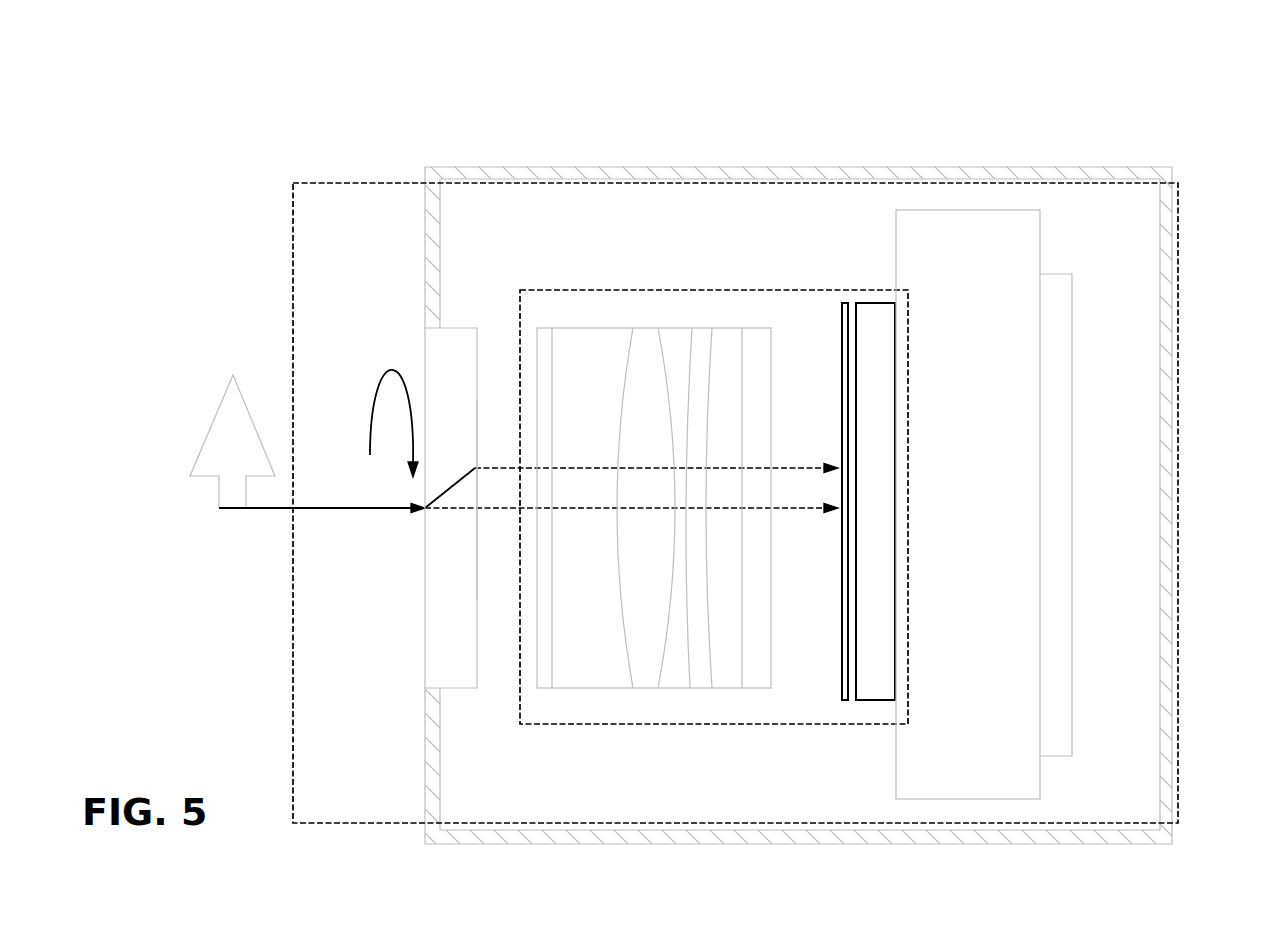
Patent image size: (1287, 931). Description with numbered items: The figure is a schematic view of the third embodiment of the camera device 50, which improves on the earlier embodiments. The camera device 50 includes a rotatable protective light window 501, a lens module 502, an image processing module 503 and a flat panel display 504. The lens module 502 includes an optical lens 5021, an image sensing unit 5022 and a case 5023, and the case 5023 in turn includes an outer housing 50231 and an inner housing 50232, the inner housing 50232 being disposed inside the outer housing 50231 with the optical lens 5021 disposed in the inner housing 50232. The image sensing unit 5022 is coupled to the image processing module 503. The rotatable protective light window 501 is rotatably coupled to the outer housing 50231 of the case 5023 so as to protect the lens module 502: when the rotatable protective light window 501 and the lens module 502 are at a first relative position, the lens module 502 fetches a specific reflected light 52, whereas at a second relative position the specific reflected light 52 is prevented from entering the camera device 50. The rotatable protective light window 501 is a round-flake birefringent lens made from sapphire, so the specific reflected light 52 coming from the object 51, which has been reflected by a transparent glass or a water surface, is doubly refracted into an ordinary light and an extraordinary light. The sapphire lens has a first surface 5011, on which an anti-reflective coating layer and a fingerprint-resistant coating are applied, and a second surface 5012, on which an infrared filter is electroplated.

The camera device 50 is at (1177, 680).
The object 51 is at (217, 417).
The specific reflected light 52 is at (353, 508).
The rotatable protective light window 501 is at (462, 687).
The first surface 5011 is at (427, 642).
The second surface 5012 is at (477, 647).
The lens module 502 is at (583, 80).
The optical lens 5021 is at (587, 395).
The image sensing unit 5022 is at (875, 302).
The case 5023 is at (705, 369).
The outer housing 50231 is at (608, 175).
The inner housing 50232 is at (697, 310).
The image processing module 503 is at (943, 210).
The flat panel display 504 is at (1072, 515).